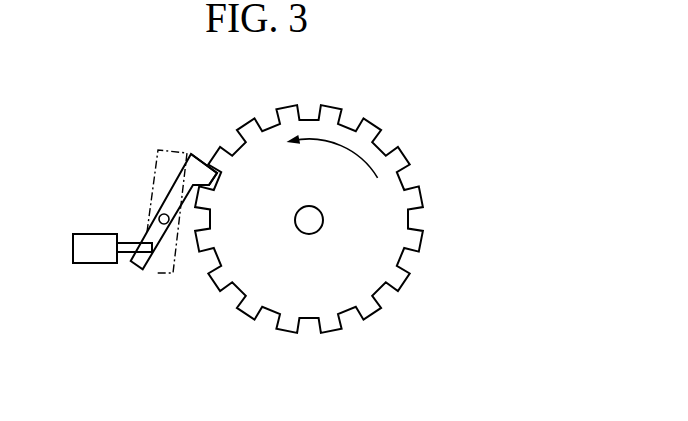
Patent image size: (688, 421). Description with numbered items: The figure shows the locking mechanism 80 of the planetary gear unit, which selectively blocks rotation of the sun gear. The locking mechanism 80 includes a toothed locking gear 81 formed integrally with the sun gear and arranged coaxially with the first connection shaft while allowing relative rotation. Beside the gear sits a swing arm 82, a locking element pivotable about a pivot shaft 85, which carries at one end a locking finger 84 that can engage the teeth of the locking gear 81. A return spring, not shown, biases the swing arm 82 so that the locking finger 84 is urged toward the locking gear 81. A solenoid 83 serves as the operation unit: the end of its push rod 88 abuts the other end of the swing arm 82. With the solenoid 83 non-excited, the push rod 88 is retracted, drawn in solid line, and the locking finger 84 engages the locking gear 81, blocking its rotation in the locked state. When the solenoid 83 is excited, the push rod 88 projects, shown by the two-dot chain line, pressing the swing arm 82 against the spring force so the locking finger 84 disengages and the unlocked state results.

The locking mechanism 80 is at (436, 115).
The locking gear 81 is at (273, 298).
The swing arm 82 is at (170, 273).
The solenoid 83 is at (92, 263).
The locking finger 84 is at (217, 174).
The pivot shaft 85 is at (162, 214).
The push rod 88 is at (124, 243).